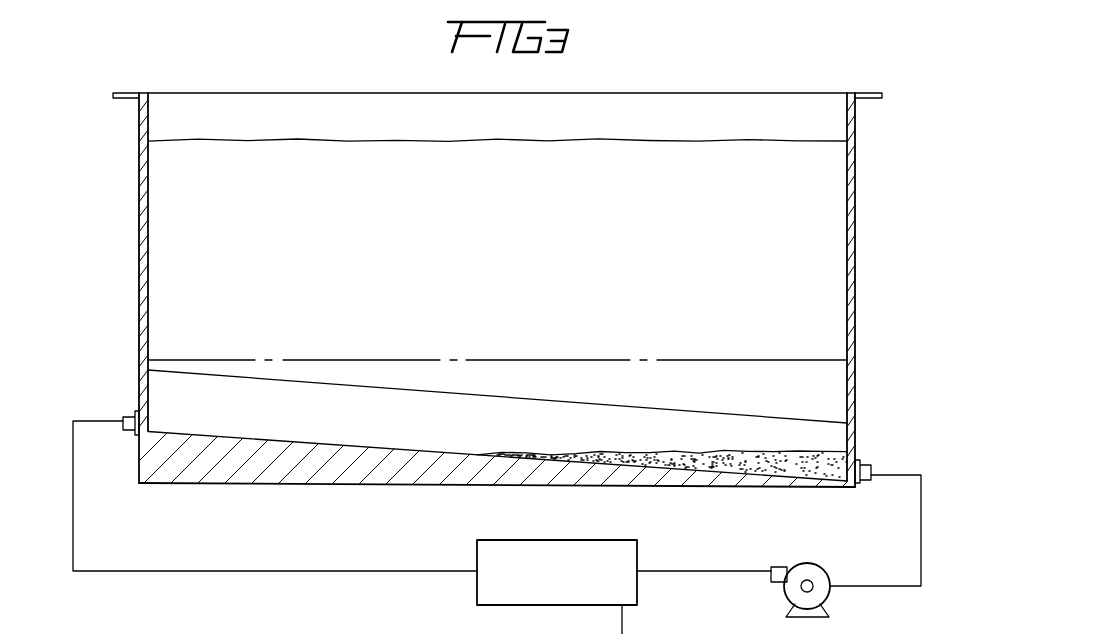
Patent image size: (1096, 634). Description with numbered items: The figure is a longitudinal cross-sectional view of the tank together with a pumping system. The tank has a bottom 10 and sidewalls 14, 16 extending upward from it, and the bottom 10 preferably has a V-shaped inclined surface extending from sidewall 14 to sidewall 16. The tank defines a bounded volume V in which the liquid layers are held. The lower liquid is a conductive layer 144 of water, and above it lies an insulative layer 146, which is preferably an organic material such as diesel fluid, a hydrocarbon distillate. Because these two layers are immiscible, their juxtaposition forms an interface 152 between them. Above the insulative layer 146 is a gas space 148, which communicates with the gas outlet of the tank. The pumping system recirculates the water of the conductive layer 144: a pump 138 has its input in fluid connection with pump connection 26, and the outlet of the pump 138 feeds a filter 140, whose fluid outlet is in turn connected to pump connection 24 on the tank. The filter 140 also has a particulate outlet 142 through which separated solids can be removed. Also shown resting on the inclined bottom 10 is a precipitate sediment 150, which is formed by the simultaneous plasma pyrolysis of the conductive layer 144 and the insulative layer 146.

The bottom 10 is at (456, 486).
The sidewall 14 is at (143, 262).
The sidewall 16 is at (853, 280).
The pump connection 24 is at (128, 420).
The pump connection 26 is at (865, 462).
The pump 138 is at (815, 570).
The filter 140 is at (622, 558).
The particulate outlet 142 is at (622, 626).
The conductive layer 144 is at (545, 370).
The insulative layer 146 is at (591, 159).
The gas space 148 is at (667, 101).
The precipitate sediment 150 is at (690, 457).
The interface 152 is at (718, 367).
The bounded volume V is at (497, 252).